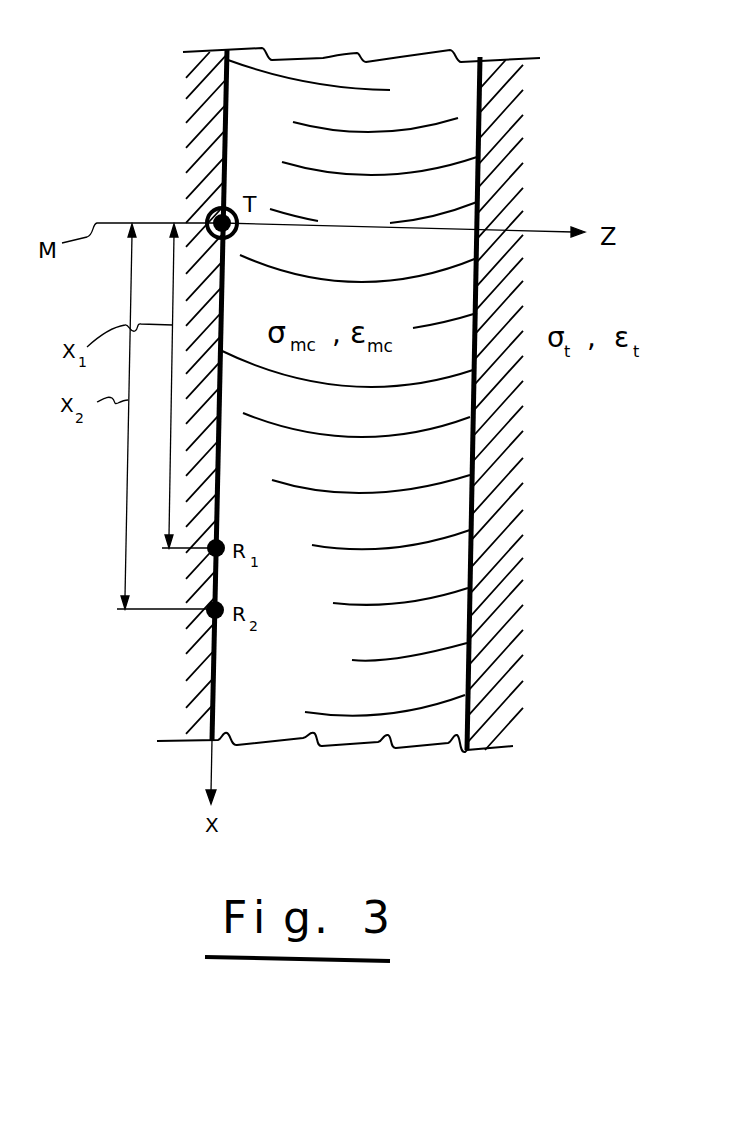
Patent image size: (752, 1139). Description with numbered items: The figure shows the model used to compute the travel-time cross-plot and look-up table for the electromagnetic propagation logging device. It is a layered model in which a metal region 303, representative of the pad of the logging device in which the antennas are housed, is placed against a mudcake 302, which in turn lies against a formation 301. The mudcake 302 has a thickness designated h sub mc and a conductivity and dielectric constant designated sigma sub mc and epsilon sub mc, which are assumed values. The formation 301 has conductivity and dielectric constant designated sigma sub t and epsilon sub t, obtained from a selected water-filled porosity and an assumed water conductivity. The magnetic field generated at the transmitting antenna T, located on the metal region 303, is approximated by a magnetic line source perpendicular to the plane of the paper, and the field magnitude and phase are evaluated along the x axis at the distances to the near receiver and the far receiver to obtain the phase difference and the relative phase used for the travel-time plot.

The formation 301 is at (517, 80).
The mudcake 302 is at (333, 78).
The metal region 303 is at (203, 64).